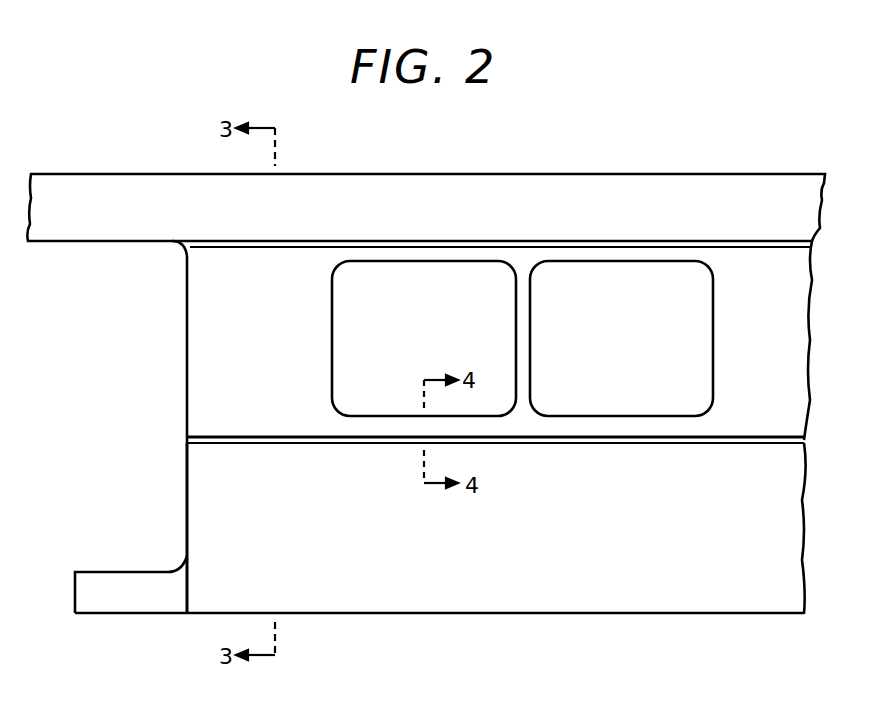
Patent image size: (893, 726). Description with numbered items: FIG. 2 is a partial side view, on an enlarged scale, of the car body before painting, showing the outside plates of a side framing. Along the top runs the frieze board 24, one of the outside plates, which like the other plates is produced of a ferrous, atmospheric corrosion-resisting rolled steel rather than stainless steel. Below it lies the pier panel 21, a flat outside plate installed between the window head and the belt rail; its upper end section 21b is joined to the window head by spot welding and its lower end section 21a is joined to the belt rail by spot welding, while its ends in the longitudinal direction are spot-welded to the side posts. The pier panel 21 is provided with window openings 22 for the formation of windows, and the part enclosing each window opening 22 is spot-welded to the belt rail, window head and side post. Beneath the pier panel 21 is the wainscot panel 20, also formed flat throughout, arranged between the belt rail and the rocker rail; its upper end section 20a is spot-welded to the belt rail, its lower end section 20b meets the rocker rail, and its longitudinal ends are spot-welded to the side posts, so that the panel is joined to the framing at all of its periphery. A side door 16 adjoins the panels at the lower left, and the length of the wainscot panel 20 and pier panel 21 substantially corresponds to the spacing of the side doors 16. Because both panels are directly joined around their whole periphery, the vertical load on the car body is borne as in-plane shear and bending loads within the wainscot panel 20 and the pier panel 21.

The side door 16 is at (139, 560).
The wainscot panel 20 is at (227, 507).
The upper end section of wainscot panel 20a is at (210, 448).
The lower flange of lower panel 20b is at (207, 604).
The pier panel 21 is at (222, 347).
The lower end section of pier panel 21a is at (228, 432).
The upper end section of pier panel 21b is at (207, 250).
The window opening 22 is at (345, 283).
The frieze board 24 is at (167, 190).